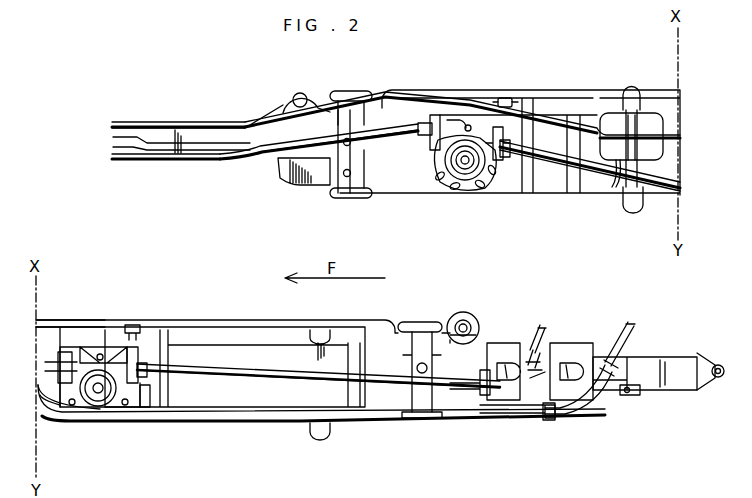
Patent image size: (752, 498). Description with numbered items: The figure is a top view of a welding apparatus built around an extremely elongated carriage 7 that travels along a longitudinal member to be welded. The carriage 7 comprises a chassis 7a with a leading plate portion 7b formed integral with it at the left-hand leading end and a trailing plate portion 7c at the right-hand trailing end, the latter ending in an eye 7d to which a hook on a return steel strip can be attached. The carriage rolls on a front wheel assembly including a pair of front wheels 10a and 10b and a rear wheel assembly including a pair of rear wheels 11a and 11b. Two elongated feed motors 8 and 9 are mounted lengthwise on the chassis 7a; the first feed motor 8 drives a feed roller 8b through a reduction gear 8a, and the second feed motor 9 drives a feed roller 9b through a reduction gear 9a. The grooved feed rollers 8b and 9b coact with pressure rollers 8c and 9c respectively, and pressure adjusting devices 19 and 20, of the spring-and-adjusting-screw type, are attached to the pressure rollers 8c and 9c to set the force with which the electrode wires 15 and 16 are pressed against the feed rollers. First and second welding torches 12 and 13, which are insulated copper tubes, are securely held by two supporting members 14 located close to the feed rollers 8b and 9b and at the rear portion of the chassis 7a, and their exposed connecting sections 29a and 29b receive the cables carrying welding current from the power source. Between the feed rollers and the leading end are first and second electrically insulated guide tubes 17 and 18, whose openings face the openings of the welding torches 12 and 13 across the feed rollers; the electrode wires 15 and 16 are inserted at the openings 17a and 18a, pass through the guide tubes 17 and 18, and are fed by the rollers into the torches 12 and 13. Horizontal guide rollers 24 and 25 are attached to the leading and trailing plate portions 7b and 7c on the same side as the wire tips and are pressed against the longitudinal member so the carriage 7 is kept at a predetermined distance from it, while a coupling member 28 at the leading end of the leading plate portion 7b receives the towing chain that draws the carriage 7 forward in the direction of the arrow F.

The carriage 7 is at (218, 318).
The chassis 7a is at (657, 92).
The leading plate portion 7b is at (283, 180).
The trailing plate portion 7c is at (662, 392).
The eye 7d is at (716, 364).
The first feed motor 8 is at (250, 413).
The reduction gear 8a is at (138, 410).
The feed roller 8b is at (105, 408).
The pressure roller 8c is at (112, 352).
The second feed motor 9 is at (565, 182).
The reduction gear 9a is at (500, 170).
The feed roller 9b is at (464, 184).
The pressure roller 9c is at (456, 140).
The front wheel 10a is at (351, 198).
The front wheel 10b is at (355, 91).
The rear wheel 11a is at (422, 420).
The rear wheel 11b is at (420, 322).
The first welding torch 12 is at (300, 375).
The second welding torch 13 is at (617, 172).
The supporting member 14 is at (510, 155).
The electrode wire 15 is at (542, 328).
The electrode wire 16 is at (625, 326).
The first guide tube 17 is at (222, 160).
The opening of guide tube 17a is at (125, 161).
The second guide tube 18 is at (218, 124).
The opening of guide tube 18a is at (125, 124).
The pressure adjusting device 19 is at (134, 325).
The pressure adjusting device 20 is at (508, 98).
The horizontal guide roller 24 is at (300, 93).
The horizontal guide roller 25 is at (463, 312).
The coupling member 28 is at (112, 143).
The connecting section 29a is at (598, 350).
The connecting section 29b is at (533, 352).